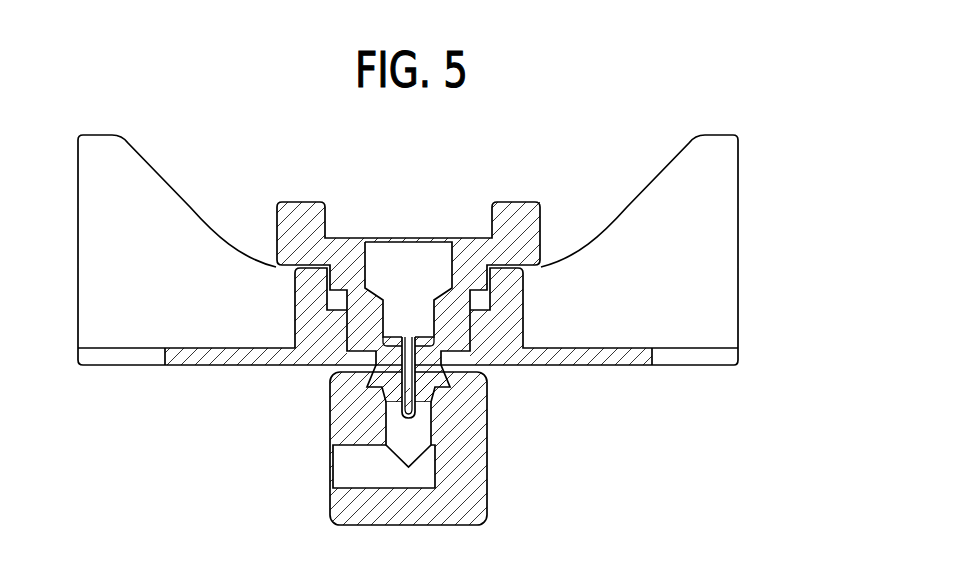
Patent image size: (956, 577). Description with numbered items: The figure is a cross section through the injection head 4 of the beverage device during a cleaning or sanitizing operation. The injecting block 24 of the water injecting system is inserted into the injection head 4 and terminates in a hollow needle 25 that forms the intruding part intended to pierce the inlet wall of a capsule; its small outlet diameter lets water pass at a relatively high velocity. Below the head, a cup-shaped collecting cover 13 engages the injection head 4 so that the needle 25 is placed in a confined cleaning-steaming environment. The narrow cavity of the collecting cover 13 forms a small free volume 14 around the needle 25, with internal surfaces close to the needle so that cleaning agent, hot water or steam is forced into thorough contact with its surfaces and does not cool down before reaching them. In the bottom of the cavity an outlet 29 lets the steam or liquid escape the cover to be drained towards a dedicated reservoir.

The injection head 4 is at (626, 338).
The injecting block 24 is at (517, 200).
The needle 25 is at (436, 405).
The collecting cover 13 is at (472, 500).
The outlet 29 is at (340, 470).
The free volume 14 is at (405, 430).